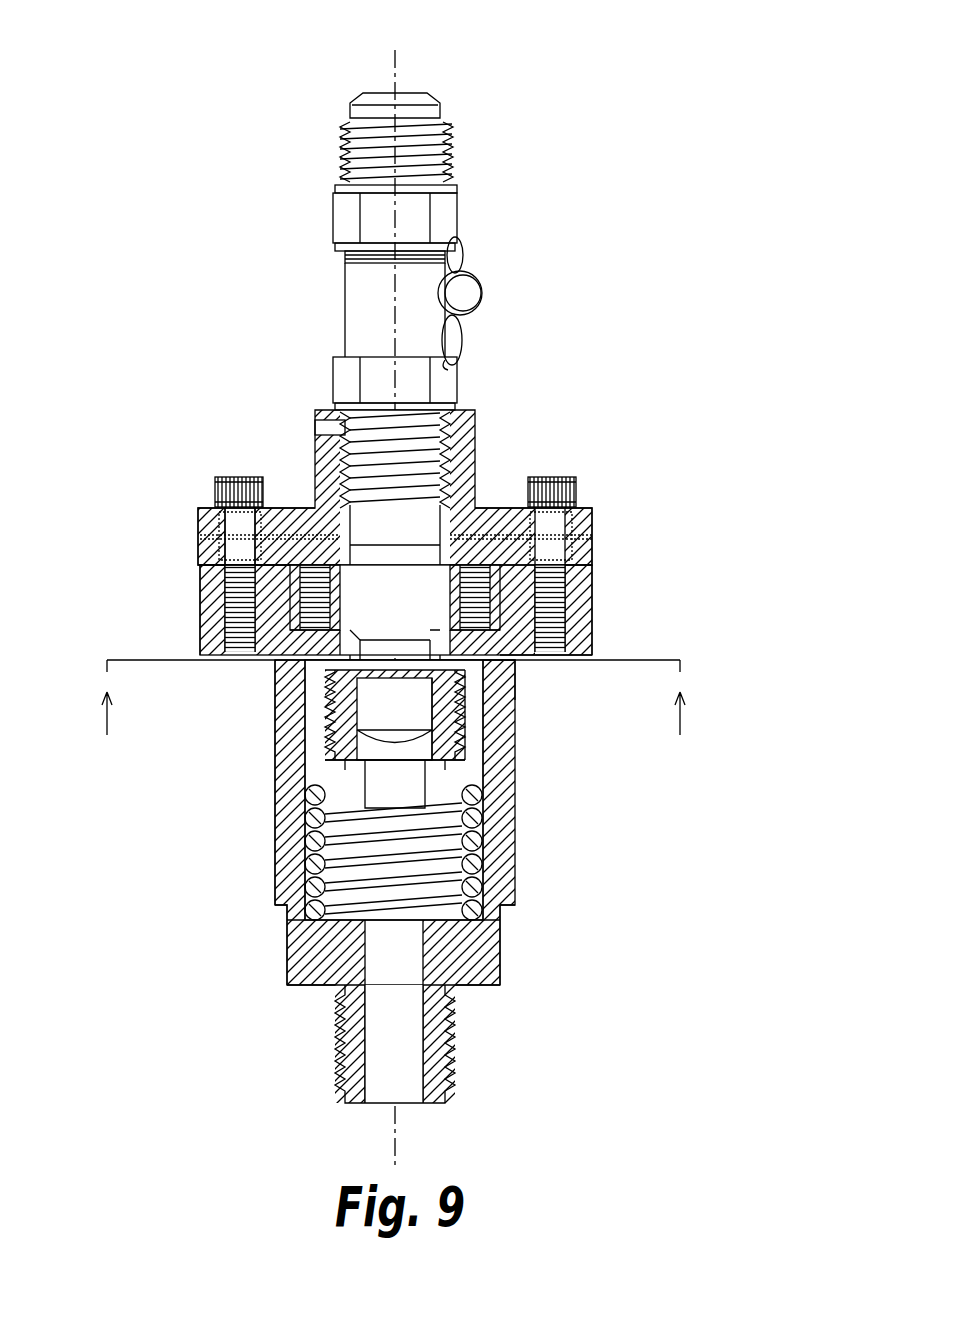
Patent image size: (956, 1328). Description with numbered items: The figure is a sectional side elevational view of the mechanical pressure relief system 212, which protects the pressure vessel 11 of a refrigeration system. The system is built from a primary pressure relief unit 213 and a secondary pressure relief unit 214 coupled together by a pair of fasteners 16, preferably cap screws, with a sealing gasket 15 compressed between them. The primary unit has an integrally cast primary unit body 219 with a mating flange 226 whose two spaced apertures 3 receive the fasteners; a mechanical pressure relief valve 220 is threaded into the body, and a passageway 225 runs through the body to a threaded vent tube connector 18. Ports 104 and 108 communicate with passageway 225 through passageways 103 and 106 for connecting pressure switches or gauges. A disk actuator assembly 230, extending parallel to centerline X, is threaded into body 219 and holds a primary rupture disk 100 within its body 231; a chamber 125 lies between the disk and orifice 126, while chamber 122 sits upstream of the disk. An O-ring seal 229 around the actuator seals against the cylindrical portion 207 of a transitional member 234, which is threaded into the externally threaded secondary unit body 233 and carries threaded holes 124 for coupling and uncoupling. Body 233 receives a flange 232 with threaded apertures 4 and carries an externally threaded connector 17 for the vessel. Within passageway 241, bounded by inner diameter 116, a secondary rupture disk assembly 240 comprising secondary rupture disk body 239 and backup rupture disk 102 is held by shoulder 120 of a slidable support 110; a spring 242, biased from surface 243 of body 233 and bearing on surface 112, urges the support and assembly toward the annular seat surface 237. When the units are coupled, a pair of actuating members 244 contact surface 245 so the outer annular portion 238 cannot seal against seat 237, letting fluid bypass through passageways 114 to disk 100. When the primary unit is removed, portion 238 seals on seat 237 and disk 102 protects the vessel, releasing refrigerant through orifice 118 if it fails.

The centerline X is at (395, 62).
The threaded vent tube connector 18 is at (460, 118).
The mechanical pressure relief system 212 is at (583, 318).
The primary pressure relief unit 213 is at (445, 385).
The mechanical pressure relief valve 220 is at (403, 296).
The passageway 106 is at (475, 480).
The primary unit body 219 is at (332, 428).
The port 104 is at (200, 520).
The port 108 is at (592, 512).
The spaced apertures 3 is at (352, 515).
The passageway 103 is at (370, 525).
The chamber 125 is at (395, 577).
The fasteners 16 is at (235, 478).
The mating flange 226 is at (230, 512).
The passageway 225 is at (205, 537).
The substantially cylindrical portion 207 is at (230, 550).
The orifice 126 is at (592, 540).
The sealing gasket 15 is at (565, 545).
The chamber 122 is at (262, 600).
The transitional member 234 is at (258, 575).
The flange 232 is at (210, 612).
The seal 229 is at (235, 620).
The annular seat surface 237 is at (292, 640).
The body 231 is at (560, 580).
The disk actuator assembly 230 is at (560, 605).
The threaded holes 124 is at (595, 655).
The surface 245 is at (300, 660).
The outer annular portion 238 is at (330, 665).
The secondary rupture disk assembly 240 is at (330, 680).
The pressure vessel 11 is at (396, 716).
The slidable support 110 is at (302, 790).
The surface 112 is at (300, 815).
The secondary unit body 233 is at (292, 870).
The spring 242 is at (502, 880).
The actuating members 244 is at (500, 678).
The passageways 114 is at (483, 720).
The primary rupture disk 100 is at (455, 665).
The spaced threaded apertures 4 is at (540, 655).
The surface 243 is at (300, 930).
The inner diameter 116 is at (502, 918).
The externally threaded connector 17 is at (455, 1040).
The secondary pressure relief unit 214 is at (330, 692).
The orifice 118 is at (305, 742).
The shoulder 120 is at (490, 740).
The passageway 241 is at (465, 762).
The secondary rupture disk body 239 is at (470, 718).
The backup rupture disk 102 is at (505, 822).